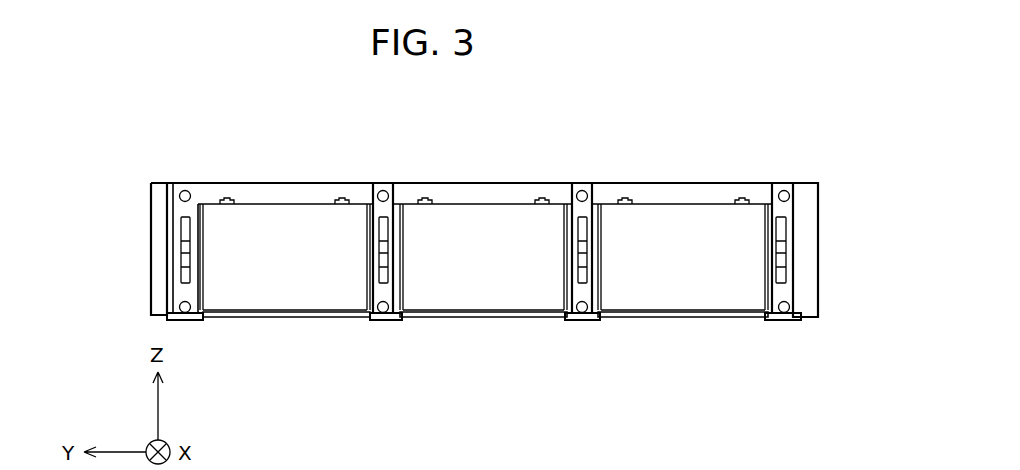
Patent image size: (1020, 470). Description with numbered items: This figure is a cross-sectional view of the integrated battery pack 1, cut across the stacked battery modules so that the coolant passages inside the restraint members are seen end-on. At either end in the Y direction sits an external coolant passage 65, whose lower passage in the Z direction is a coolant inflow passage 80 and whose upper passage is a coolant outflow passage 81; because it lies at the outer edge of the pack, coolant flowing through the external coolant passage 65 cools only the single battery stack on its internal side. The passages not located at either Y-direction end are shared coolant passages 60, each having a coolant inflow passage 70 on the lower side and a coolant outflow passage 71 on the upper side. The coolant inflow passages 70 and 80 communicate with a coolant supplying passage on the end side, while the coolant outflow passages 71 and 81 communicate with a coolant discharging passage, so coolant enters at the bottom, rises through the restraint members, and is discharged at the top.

The integrated battery pack 1 is at (673, 165).
The shared coolant passage 60 is at (379, 232).
The external coolant passage 65 is at (183, 243).
The coolant inflow passage 70 is at (388, 267).
The coolant outflow passage 71 is at (381, 241).
The coolant inflow passage 80 is at (184, 272).
The coolant outflow passage 81 is at (184, 231).